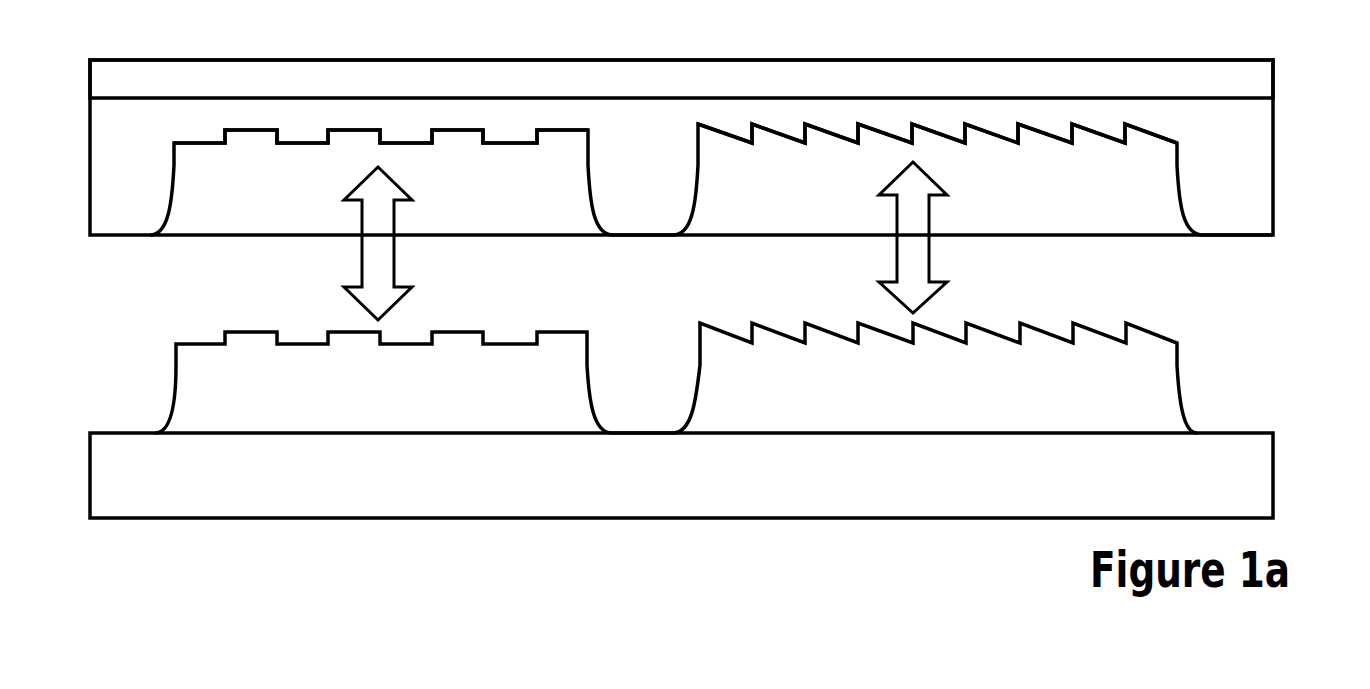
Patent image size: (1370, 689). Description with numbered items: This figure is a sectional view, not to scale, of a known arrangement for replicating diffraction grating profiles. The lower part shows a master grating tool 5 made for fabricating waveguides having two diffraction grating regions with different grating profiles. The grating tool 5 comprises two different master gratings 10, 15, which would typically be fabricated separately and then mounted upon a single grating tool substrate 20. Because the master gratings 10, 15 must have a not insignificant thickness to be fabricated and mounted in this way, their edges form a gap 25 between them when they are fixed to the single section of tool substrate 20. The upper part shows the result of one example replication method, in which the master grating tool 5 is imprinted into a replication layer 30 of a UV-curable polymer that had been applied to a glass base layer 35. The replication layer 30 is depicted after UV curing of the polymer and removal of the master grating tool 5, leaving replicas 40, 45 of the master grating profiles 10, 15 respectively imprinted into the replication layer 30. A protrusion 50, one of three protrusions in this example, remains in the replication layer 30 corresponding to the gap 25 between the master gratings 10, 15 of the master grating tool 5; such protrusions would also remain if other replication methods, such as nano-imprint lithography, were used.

The master grating tool 5 is at (719, 309).
The master grating 10 is at (198, 340).
The master grating 15 is at (1160, 333).
The grating tool substrate 20 is at (273, 518).
The gap 25 is at (643, 383).
The replication layer 30 is at (722, 117).
The glass base layer 35 is at (778, 60).
The replica 40 is at (293, 145).
The replica 45 is at (1097, 136).
The protrusion 50 is at (650, 187).